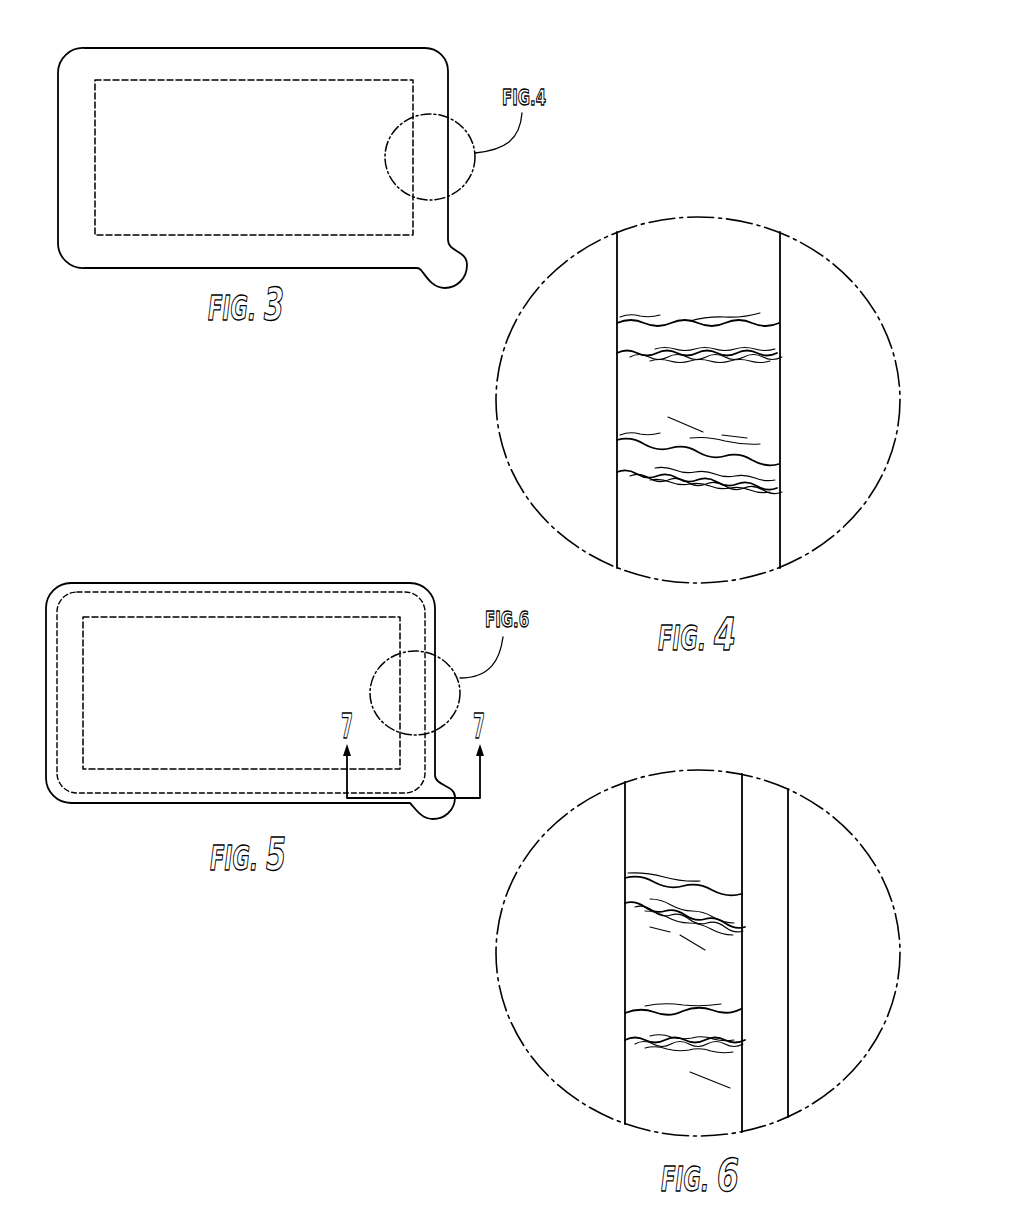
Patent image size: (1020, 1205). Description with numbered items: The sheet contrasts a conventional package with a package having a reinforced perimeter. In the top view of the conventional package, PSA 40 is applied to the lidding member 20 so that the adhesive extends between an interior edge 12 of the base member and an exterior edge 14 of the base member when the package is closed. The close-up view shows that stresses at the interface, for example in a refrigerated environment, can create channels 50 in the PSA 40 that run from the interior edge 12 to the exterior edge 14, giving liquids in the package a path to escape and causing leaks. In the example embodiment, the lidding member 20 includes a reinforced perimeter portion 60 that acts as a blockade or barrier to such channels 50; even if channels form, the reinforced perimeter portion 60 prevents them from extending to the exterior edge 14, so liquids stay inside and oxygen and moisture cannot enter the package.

In FIG. 3, the interior edge 12 is at (413, 213).
In FIG. 4, the interior edge 12 is at (616, 514).
In FIG. 5, the interior edge 12 is at (398, 633).
In FIG. 6, the interior edge 12 is at (624, 839).
In FIG. 3, the exterior edge 14 is at (448, 228).
In FIG. 4, the exterior edge 14 is at (780, 525).
In FIG. 5, the exterior edge 14 is at (435, 620).
In FIG. 6, the exterior edge 14 is at (790, 854).
In FIG. 3, the lidding member 20 is at (157, 95).
In FIG. 4, the lidding member 20 is at (573, 430).
In FIG. 6, the lidding member 20 is at (566, 993).
In FIG. 3, the PSA 40 is at (432, 88).
In FIG. 4, the PSA 40 is at (689, 270).
In FIG. 6, the PSA 40 is at (684, 805).
In FIG. 4, the channels 50 is at (734, 333).
In FIG. 6, the channels 50 is at (704, 880).
In FIG. 6, the reinforced perimeter portion 60 is at (777, 958).